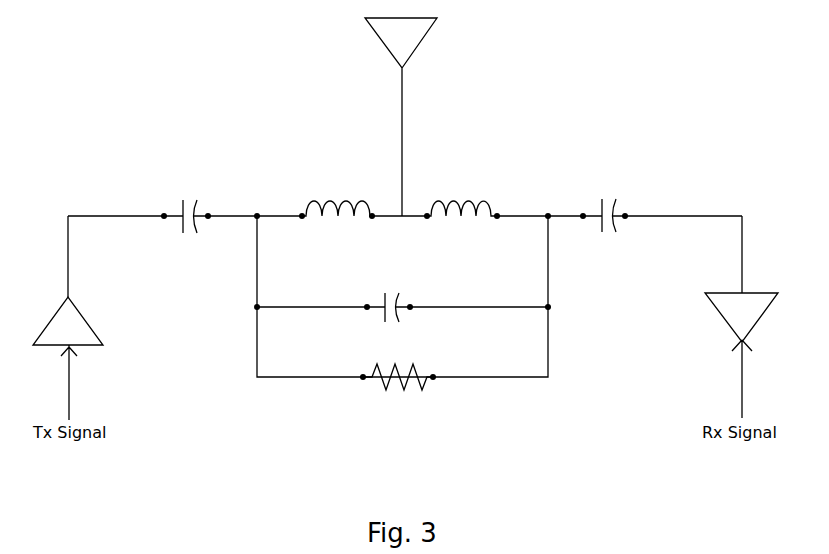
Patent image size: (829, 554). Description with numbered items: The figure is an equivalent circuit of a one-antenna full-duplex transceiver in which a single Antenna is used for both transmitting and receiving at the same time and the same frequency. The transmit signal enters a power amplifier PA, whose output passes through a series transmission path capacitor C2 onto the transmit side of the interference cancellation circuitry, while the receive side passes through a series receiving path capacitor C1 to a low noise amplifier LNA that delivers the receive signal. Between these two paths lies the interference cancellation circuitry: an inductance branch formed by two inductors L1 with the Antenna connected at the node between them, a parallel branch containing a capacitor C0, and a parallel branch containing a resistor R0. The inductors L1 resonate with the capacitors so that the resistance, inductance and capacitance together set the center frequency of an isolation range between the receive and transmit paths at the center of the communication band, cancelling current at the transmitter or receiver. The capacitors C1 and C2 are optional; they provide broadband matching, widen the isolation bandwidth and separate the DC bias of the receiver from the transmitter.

The antenna Antenna is at (432, 117).
The transmission path capacitance element C2 is at (186, 204).
The inductance element L1 is at (399, 197).
The capacitance element C0 is at (388, 295).
The resistance element R0 is at (398, 366).
The receiving path capacitance element C1 is at (604, 204).
The power amplifier PA is at (68, 358).
The low noise amplifier LNA is at (741, 317).